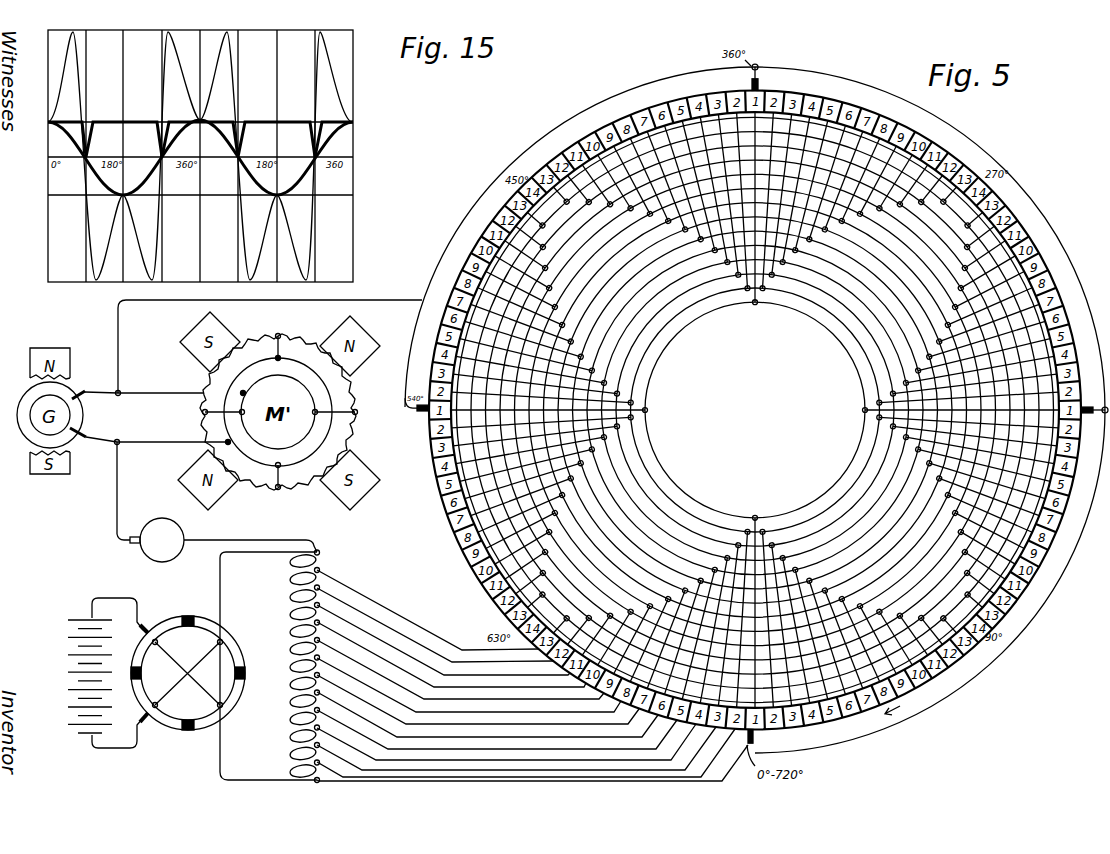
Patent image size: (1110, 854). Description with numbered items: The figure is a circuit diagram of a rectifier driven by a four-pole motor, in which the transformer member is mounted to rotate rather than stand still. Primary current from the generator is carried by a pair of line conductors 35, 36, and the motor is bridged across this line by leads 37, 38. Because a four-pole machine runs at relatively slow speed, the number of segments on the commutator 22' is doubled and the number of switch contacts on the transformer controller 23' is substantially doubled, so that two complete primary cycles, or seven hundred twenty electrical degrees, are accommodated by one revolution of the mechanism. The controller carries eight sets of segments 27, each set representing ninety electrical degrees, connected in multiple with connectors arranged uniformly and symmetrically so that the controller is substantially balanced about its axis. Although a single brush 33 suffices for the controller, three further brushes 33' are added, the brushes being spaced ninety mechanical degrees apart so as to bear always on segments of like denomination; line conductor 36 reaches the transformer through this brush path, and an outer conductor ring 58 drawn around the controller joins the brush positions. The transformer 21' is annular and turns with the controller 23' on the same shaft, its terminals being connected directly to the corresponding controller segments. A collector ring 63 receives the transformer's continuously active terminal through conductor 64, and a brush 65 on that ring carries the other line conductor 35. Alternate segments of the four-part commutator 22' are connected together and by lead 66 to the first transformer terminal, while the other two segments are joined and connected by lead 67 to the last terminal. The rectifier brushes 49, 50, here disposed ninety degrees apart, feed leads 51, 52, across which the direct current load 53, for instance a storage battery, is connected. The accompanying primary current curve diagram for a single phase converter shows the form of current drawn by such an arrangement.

The sets of segments 27 is at (446, 511).
The transformer controller 23' is at (749, 410).
The conductor ring 58 is at (945, 693).
The brush 33 is at (928, 578).
The brushes 33' is at (589, 251).
The line conductor 36 is at (382, 300).
The line conductor 35 is at (117, 442).
The lead 37 is at (171, 444).
The lead 38 is at (197, 392).
The brush 65 is at (133, 543).
The collector ring 63 is at (166, 561).
The conductor 64 is at (221, 540).
The lead 67 is at (221, 596).
The lead 66 is at (240, 780).
The transformer 21' is at (294, 663).
The commutator 22' is at (196, 668).
The rectifier brush 49 is at (145, 625).
The rectifier brush 50 is at (146, 725).
The lead 51 is at (127, 597).
The lead 52 is at (108, 750).
The direct current load 53 is at (78, 677).